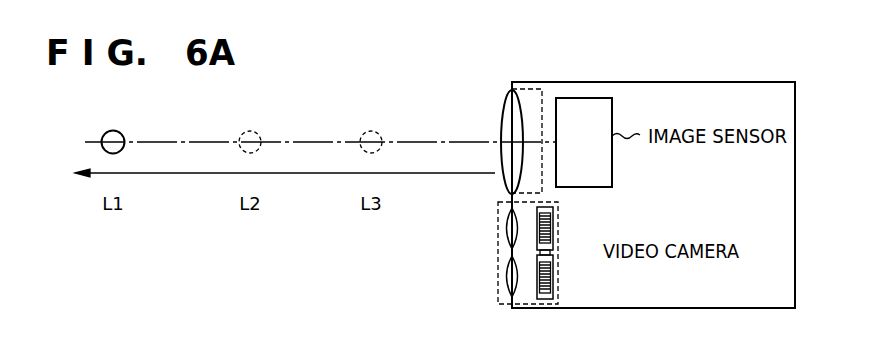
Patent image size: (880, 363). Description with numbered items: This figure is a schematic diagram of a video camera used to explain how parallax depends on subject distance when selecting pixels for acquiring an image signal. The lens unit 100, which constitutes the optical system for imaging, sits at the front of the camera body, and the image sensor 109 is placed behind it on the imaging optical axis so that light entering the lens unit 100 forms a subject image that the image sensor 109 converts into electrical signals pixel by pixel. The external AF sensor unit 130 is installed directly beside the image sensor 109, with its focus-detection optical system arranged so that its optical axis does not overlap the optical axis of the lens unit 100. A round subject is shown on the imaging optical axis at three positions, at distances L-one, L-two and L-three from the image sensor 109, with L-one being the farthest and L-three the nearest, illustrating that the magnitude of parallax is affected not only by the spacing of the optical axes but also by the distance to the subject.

The lens unit 100 is at (524, 88).
The image sensor 109 is at (565, 154).
The external AF sensor unit 130 is at (498, 260).